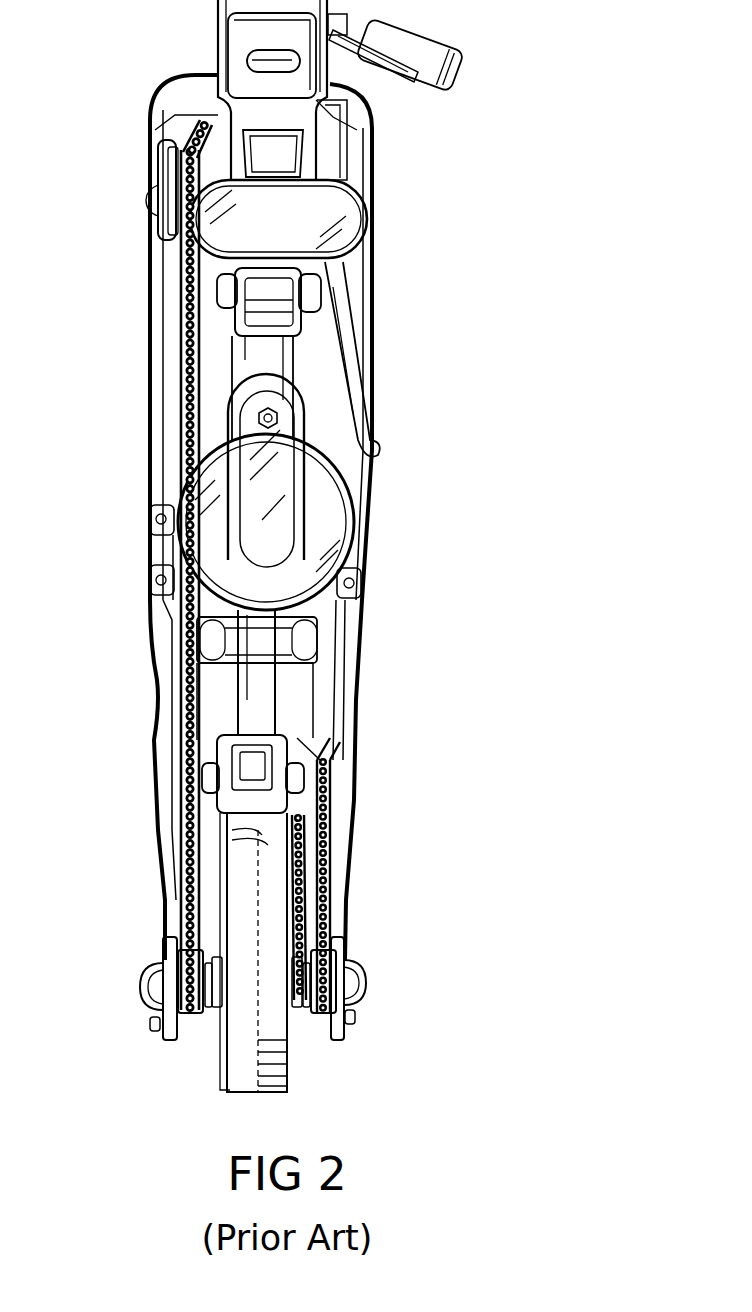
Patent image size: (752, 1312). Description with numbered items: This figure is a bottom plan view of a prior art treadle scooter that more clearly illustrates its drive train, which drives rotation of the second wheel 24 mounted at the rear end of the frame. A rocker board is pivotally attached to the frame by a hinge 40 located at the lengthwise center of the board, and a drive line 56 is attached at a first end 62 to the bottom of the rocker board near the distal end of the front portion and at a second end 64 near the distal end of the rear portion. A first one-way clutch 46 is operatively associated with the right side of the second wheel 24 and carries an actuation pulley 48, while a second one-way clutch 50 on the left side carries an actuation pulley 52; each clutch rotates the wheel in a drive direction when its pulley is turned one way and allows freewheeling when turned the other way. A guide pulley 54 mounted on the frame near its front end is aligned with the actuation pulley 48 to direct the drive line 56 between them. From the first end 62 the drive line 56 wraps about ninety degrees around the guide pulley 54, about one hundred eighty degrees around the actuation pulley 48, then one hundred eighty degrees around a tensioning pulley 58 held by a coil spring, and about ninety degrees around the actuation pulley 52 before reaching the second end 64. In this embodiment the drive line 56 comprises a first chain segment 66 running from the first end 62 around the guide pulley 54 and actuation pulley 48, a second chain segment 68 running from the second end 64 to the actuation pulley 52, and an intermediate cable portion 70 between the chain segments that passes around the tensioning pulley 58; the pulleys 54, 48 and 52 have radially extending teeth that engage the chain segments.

The second wheel 24 is at (292, 1045).
The hinge 40 is at (385, 547).
The first one-way clutch 46 is at (188, 1025).
The actuation pulley 48 is at (173, 970).
The second one-way clutch 50 is at (322, 1026).
The actuation pulley 52 is at (324, 975).
The guide pulley 54 is at (160, 190).
The drive line 56 is at (162, 343).
The tensioning pulley 58 is at (325, 505).
The first end 62 is at (204, 126).
The second end 64 is at (300, 805).
The first chain segment 66 is at (180, 388).
The second chain segment 68 is at (332, 878).
The intermediate cable portion 70 is at (357, 600).